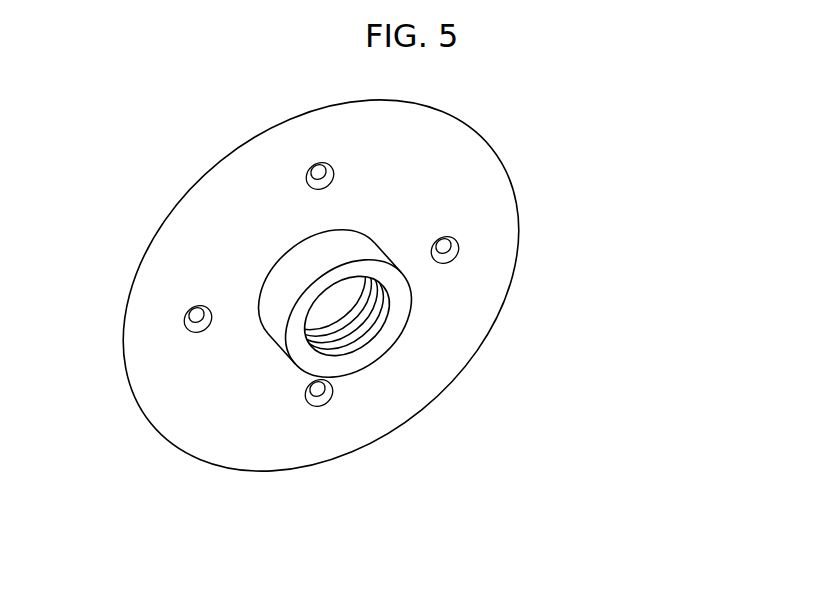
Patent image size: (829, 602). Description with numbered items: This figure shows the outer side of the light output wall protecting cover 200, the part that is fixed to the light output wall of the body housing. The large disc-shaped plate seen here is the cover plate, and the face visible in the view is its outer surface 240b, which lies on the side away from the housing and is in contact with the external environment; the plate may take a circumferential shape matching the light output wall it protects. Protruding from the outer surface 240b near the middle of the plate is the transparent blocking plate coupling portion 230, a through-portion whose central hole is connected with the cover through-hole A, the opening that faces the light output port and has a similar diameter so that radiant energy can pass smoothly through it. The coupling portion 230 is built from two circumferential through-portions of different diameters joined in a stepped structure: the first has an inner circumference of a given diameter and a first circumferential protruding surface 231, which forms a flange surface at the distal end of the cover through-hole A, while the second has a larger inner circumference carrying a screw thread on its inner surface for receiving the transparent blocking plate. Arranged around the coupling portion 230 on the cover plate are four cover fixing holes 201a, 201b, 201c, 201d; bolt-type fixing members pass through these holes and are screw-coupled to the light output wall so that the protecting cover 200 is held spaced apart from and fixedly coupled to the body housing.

The light output wall protecting cover 200 is at (504, 102).
The outer surface 240b is at (477, 193).
The transparent blocking plate coupling portion 230 is at (282, 310).
The first circumferential protruding surface 231 is at (335, 318).
The cover through-hole A is at (335, 293).
The cover fixing hole 201a is at (313, 169).
The cover fixing hole 201b is at (447, 251).
The cover fixing hole 201c is at (318, 395).
The cover fixing hole 201d is at (183, 313).